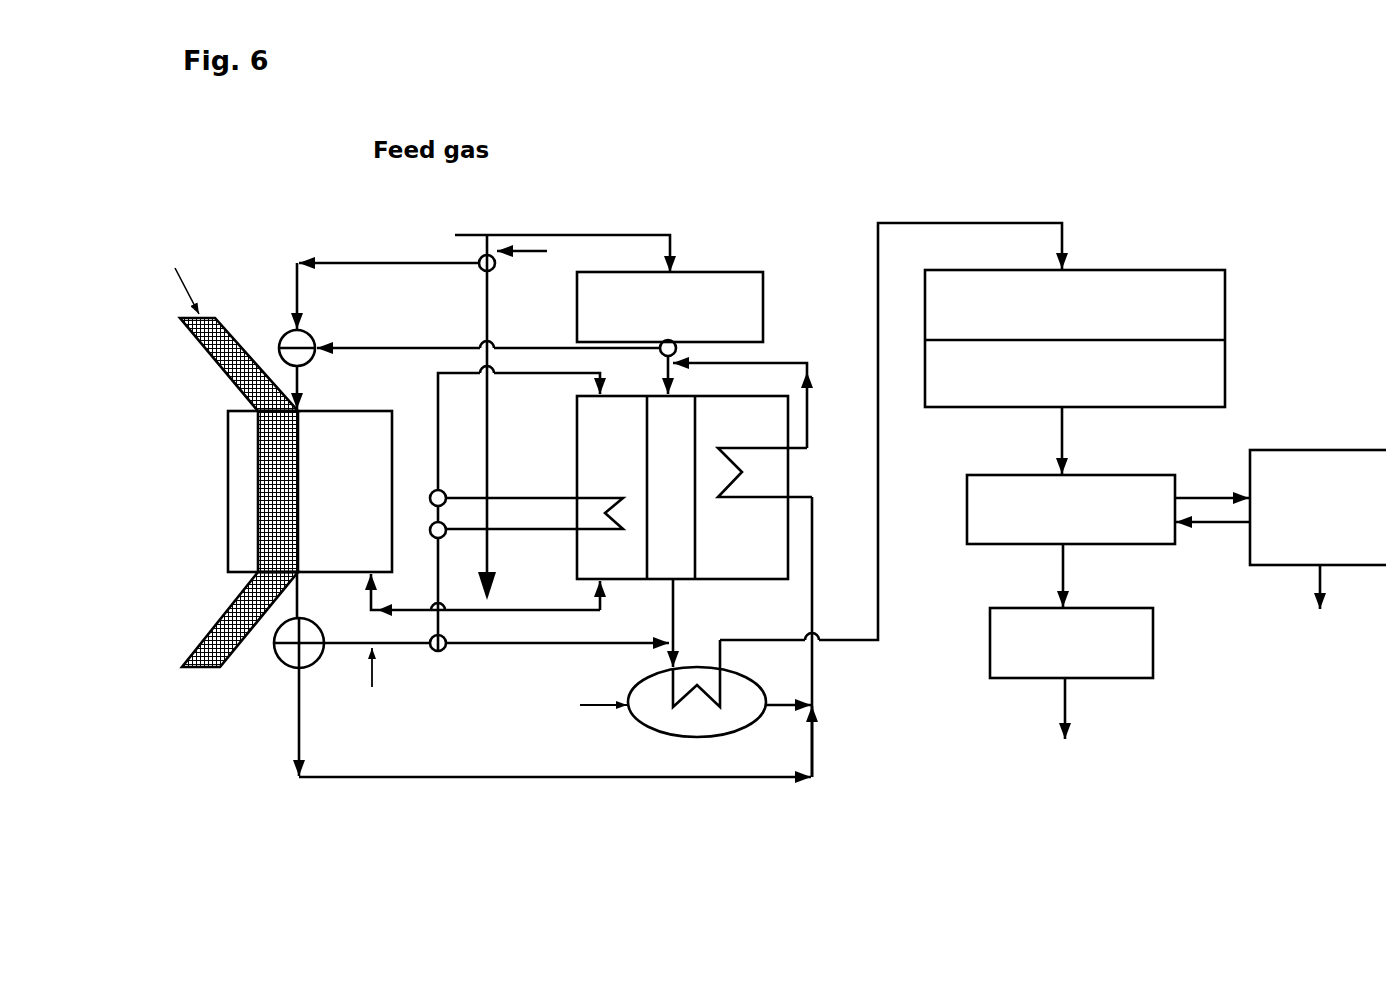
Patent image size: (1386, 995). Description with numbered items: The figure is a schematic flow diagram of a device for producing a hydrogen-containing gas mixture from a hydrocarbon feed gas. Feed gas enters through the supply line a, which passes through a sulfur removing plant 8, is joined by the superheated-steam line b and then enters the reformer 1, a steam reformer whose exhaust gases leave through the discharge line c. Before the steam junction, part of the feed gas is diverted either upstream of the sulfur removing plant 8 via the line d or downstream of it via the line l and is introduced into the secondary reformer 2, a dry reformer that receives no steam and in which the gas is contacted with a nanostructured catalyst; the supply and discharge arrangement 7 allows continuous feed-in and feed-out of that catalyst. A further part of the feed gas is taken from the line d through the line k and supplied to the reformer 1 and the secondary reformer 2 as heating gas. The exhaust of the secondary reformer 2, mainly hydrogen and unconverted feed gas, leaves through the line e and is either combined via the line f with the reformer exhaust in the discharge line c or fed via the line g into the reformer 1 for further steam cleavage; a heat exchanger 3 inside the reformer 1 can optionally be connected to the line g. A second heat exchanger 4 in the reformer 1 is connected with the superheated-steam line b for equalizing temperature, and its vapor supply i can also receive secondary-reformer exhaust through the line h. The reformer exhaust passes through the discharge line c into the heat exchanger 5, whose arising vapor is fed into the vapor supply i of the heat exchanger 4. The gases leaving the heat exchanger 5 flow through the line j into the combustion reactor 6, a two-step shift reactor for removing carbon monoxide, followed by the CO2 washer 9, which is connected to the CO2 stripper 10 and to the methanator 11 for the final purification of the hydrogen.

The reformer 1 is at (575, 447).
The secondary reformer 2 is at (225, 491).
The heat exchanger 3 is at (602, 492).
The heat exchanger 4 is at (729, 446).
The heat exchanger 5 is at (643, 727).
The combustion reactor 6 is at (1232, 289).
The supply and discharge arrangement 7 is at (207, 361).
The sulfur removing plant 8 is at (739, 269).
The CO2 washer 9 is at (1140, 471).
The CO2 stripper 10 is at (1324, 444).
The methanator 11 is at (1114, 603).
The supply line a is at (468, 232).
The superheated-steam line b is at (794, 357).
The discharge line c is at (681, 625).
The line d is at (292, 284).
The line e is at (370, 682).
The line f is at (554, 650).
The line g is at (435, 454).
The line h is at (296, 721).
The vapor supply i is at (816, 561).
The line j is at (885, 597).
The line k is at (482, 317).
The line l is at (375, 346).